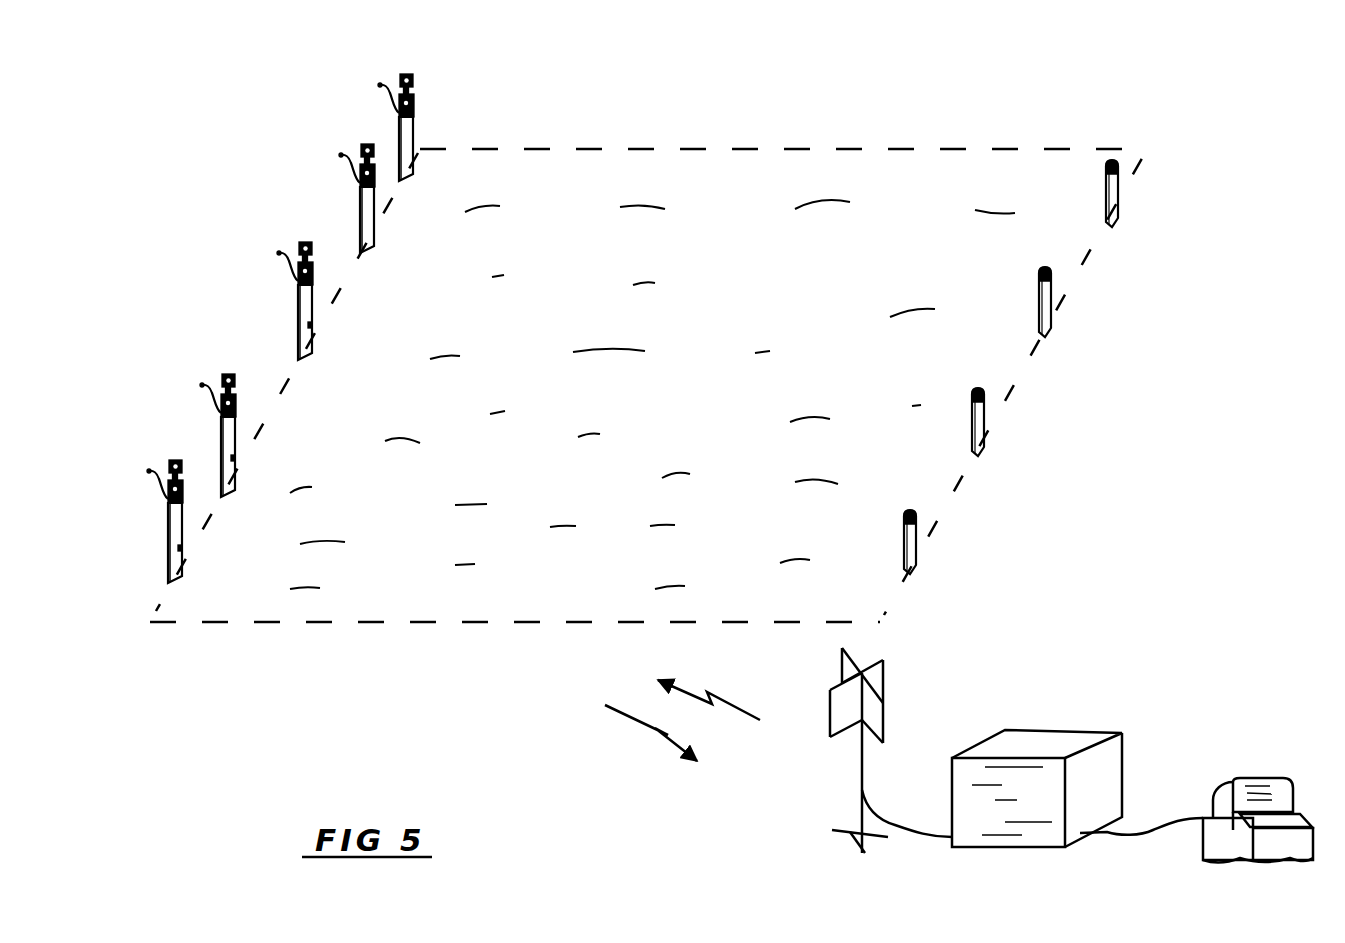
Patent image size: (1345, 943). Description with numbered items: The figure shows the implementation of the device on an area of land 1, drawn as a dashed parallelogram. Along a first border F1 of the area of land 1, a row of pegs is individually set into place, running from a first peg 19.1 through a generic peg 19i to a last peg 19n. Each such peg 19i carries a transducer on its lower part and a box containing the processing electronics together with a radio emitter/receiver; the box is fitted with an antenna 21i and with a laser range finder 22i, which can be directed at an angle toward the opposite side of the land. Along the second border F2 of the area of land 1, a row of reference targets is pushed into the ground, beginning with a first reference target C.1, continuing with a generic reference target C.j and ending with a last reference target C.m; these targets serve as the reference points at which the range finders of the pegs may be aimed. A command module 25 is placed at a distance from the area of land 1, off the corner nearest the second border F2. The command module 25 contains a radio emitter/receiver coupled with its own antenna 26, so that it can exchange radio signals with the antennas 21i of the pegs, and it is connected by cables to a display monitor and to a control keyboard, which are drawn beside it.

The area of land 1 is at (523, 582).
The peg 19.1 is at (413, 133).
The peg 19i is at (312, 312).
The peg 19n is at (176, 535).
The antenna 21i is at (295, 258).
The laser range finder 22i is at (306, 241).
The first border F1 is at (158, 604).
The second border F2 is at (896, 600).
The reference target C.1 is at (1113, 192).
The reference target C.j is at (1047, 308).
The reference target C.m is at (913, 550).
The command module 25 is at (1099, 721).
The antenna 26 is at (902, 681).